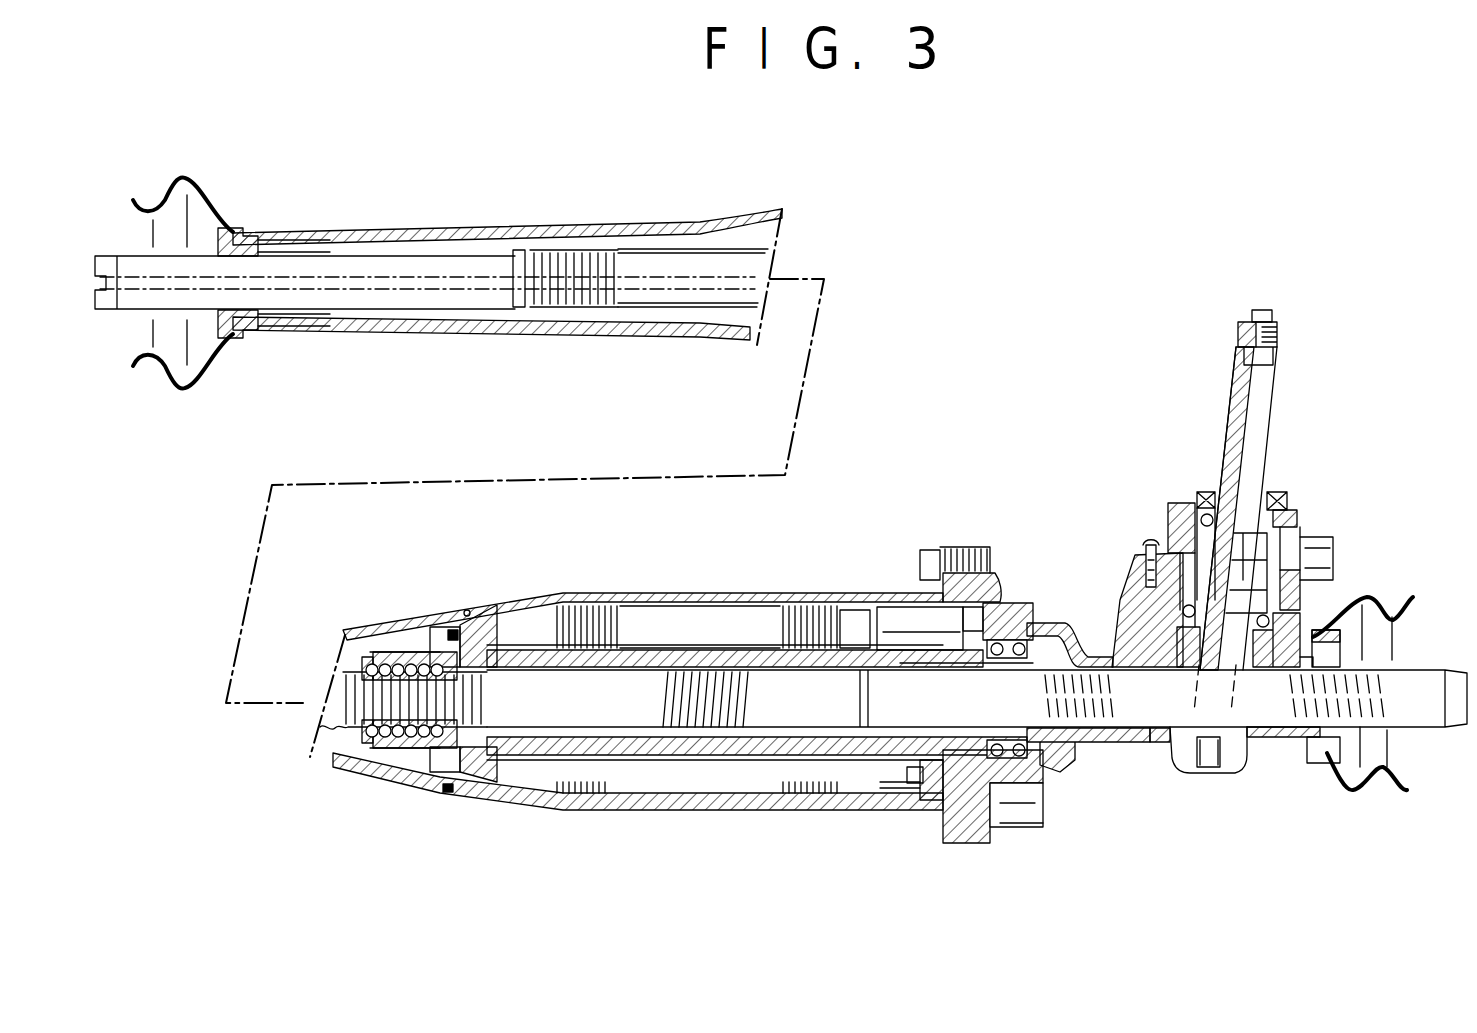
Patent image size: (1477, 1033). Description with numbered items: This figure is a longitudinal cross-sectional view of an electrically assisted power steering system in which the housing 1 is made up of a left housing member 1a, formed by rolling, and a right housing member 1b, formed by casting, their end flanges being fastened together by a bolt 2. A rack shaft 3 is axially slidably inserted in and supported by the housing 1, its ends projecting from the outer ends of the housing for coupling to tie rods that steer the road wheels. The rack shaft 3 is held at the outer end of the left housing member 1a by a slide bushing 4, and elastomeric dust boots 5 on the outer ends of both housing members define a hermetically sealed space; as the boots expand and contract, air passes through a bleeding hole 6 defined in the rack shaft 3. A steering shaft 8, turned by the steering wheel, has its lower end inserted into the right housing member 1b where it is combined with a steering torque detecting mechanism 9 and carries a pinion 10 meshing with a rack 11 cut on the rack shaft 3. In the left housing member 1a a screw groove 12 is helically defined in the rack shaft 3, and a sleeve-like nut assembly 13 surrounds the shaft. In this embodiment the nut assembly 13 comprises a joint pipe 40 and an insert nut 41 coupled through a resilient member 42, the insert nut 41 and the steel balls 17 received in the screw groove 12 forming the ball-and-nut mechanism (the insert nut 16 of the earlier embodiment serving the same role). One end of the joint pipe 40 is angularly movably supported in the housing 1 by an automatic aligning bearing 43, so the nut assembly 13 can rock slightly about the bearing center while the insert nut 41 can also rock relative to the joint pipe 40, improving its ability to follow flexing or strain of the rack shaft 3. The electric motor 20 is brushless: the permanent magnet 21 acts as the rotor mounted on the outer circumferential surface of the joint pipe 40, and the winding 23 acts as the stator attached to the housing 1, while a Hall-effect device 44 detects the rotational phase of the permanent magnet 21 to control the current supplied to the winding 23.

The housing 1 is at (983, 526).
The left housing member 1a is at (605, 228).
The right housing member 1b is at (1052, 640).
The bolt 2 is at (995, 567).
The rack shaft 3 is at (693, 268).
The slide bushing 4 is at (293, 248).
The dust boot 5 is at (203, 182).
The bleeding hole 6 is at (415, 285).
The steering shaft 8 is at (1267, 408).
The steering torque detecting mechanism 9 is at (1300, 520).
The pinion 10 is at (1193, 705).
The rack 11 is at (1300, 697).
The screw groove 12 is at (372, 702).
The nut assembly 13 is at (738, 748).
The insert nut 16 is at (408, 745).
The steel balls 17 is at (402, 725).
The electric motor 20 is at (645, 621).
The permanent magnet 21 is at (848, 635).
The winding 23 is at (745, 615).
The joint pipe 40 is at (806, 660).
The insert nut 41 is at (398, 663).
The resilient member 42 is at (455, 630).
The automatic aligning bearing 43 is at (1022, 795).
The Hall-effect device 44 is at (898, 630).